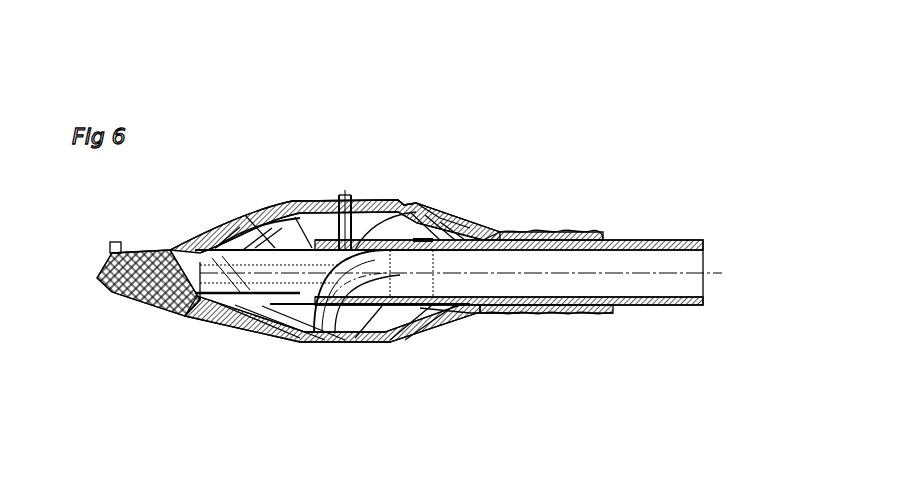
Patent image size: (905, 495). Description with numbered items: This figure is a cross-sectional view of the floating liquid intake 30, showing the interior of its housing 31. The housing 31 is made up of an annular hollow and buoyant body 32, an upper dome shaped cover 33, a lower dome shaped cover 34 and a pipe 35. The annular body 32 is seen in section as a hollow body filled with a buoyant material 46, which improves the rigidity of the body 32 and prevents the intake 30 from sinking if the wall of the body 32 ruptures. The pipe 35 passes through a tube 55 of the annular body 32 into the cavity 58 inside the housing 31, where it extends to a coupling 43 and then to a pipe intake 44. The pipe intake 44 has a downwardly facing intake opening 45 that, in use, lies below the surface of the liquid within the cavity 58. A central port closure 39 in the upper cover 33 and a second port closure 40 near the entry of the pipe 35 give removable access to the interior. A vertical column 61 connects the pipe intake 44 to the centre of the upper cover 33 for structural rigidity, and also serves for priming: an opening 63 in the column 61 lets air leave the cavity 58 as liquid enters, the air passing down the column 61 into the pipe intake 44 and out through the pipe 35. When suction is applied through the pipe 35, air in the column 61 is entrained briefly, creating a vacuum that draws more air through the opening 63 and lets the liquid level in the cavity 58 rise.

The liquid intake 30 is at (597, 140).
The housing 31 is at (200, 230).
The annular hollow and buoyant body 32 is at (93, 290).
The upper dome shaped cover 33 is at (293, 198).
The lower dome shaped cover 34 is at (443, 322).
The pipe 35 is at (670, 240).
The central port closure 39 is at (320, 198).
The second port closure 40 is at (473, 222).
The coupling 43 is at (443, 217).
The pipe intake 44 is at (427, 306).
The intake opening 45 is at (365, 342).
The buoyant material 46 is at (152, 306).
The tube 55 is at (570, 316).
The cavity 58 is at (252, 303).
The vertical column 61 is at (377, 198).
The opening 63 is at (363, 198).